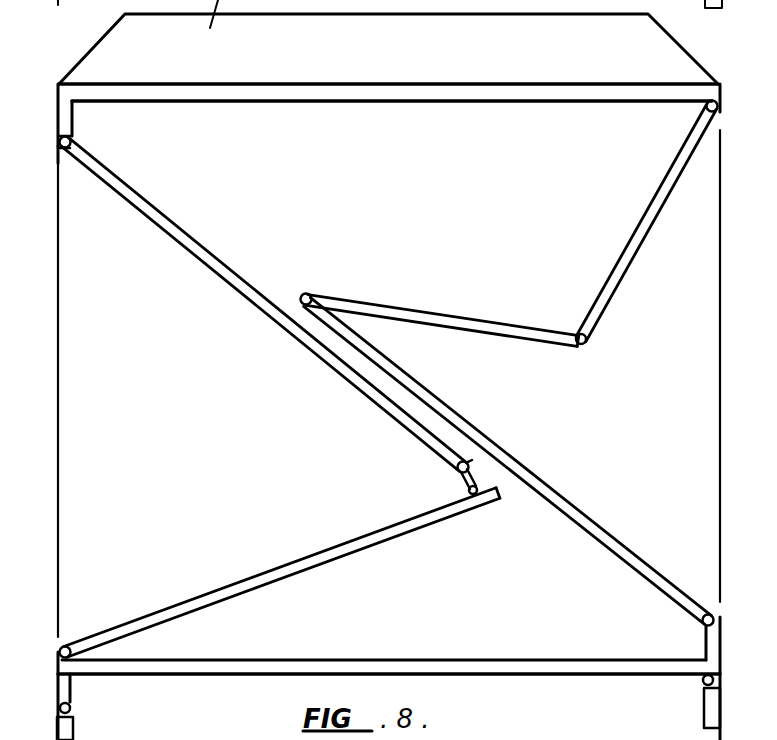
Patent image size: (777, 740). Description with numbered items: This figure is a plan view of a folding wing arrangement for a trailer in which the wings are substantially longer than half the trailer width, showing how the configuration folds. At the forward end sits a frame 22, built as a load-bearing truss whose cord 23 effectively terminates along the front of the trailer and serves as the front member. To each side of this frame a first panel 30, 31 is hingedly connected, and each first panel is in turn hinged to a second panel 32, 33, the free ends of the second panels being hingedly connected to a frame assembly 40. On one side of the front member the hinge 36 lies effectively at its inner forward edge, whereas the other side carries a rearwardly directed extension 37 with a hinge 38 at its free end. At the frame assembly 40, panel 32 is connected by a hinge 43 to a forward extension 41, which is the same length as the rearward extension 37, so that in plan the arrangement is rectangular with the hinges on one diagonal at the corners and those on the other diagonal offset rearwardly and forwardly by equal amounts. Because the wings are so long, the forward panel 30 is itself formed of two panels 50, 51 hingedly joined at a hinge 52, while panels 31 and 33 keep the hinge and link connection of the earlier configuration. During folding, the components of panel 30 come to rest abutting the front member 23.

The frame 22 is at (477, 90).
The cord 23 is at (348, 98).
The panel 30 is at (622, 320).
The panel 31 is at (312, 334).
The panel 32 is at (498, 456).
The panel 33 is at (340, 548).
The hinge 36 is at (705, 107).
The rearwardly directed extension 37 is at (72, 130).
The hinge 38 is at (66, 151).
The frame assembly 40 is at (390, 665).
The forward extension 41 is at (706, 647).
The hinge 43 is at (703, 618).
The panel 50 is at (657, 195).
The panel 51 is at (462, 330).
The hinge 52 is at (580, 333).